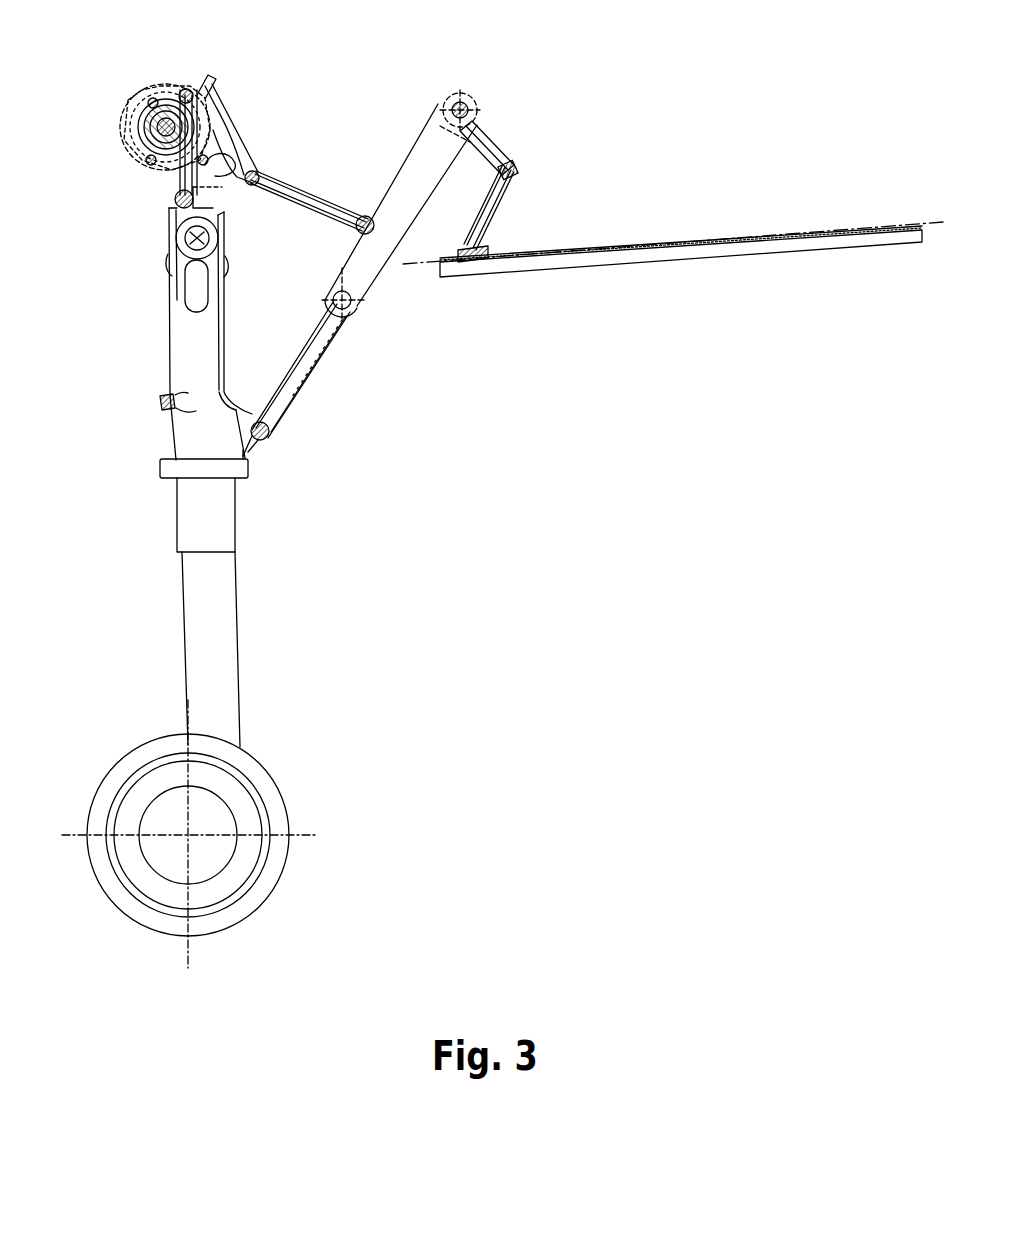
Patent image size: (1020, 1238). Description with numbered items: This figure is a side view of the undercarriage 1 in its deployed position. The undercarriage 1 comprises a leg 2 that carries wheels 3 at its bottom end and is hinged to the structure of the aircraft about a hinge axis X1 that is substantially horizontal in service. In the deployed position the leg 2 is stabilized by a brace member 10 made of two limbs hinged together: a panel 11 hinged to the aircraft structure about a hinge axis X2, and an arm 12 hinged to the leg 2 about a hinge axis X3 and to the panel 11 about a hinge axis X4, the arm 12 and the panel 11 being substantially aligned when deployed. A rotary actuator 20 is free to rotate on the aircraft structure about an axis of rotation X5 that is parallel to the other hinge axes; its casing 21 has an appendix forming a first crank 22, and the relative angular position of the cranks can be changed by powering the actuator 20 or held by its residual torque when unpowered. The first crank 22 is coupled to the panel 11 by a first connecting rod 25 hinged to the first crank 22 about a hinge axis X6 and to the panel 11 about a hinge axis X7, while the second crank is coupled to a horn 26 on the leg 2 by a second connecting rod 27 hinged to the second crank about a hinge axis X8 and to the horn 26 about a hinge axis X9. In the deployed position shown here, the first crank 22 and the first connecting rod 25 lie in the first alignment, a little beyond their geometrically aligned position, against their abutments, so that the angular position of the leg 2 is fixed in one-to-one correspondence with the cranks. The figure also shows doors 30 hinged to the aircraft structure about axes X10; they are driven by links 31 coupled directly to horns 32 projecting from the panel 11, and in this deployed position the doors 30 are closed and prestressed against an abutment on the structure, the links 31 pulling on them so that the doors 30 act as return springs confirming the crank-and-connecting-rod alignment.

The undercarriage 1 is at (128, 527).
The leg 2 is at (188, 348).
The wheels 3 is at (270, 778).
The brace member 10 is at (350, 355).
The panel 11 is at (355, 266).
The arm 12 is at (310, 378).
The rotary actuator 20 is at (112, 112).
The casing 21 is at (130, 138).
The first crank 22 is at (230, 143).
The first connecting rod 25 is at (306, 190).
The horn 26 is at (203, 208).
The second connecting rod 27 is at (183, 165).
The doors 30 is at (600, 270).
The links 31 is at (497, 205).
The horns 32 is at (490, 148).
The hinge axis X1 is at (200, 237).
The hinge axis X2 is at (466, 106).
The hinge axis X3 is at (268, 438).
The hinge axis X4 is at (338, 300).
The axis of rotation X5 is at (160, 125).
The hinge axis X6 is at (258, 176).
The hinge axis X7 is at (366, 218).
The hinge axis X8 is at (188, 90).
The hinge axis X9 is at (175, 200).
The door hinge axes X10 is at (410, 266).